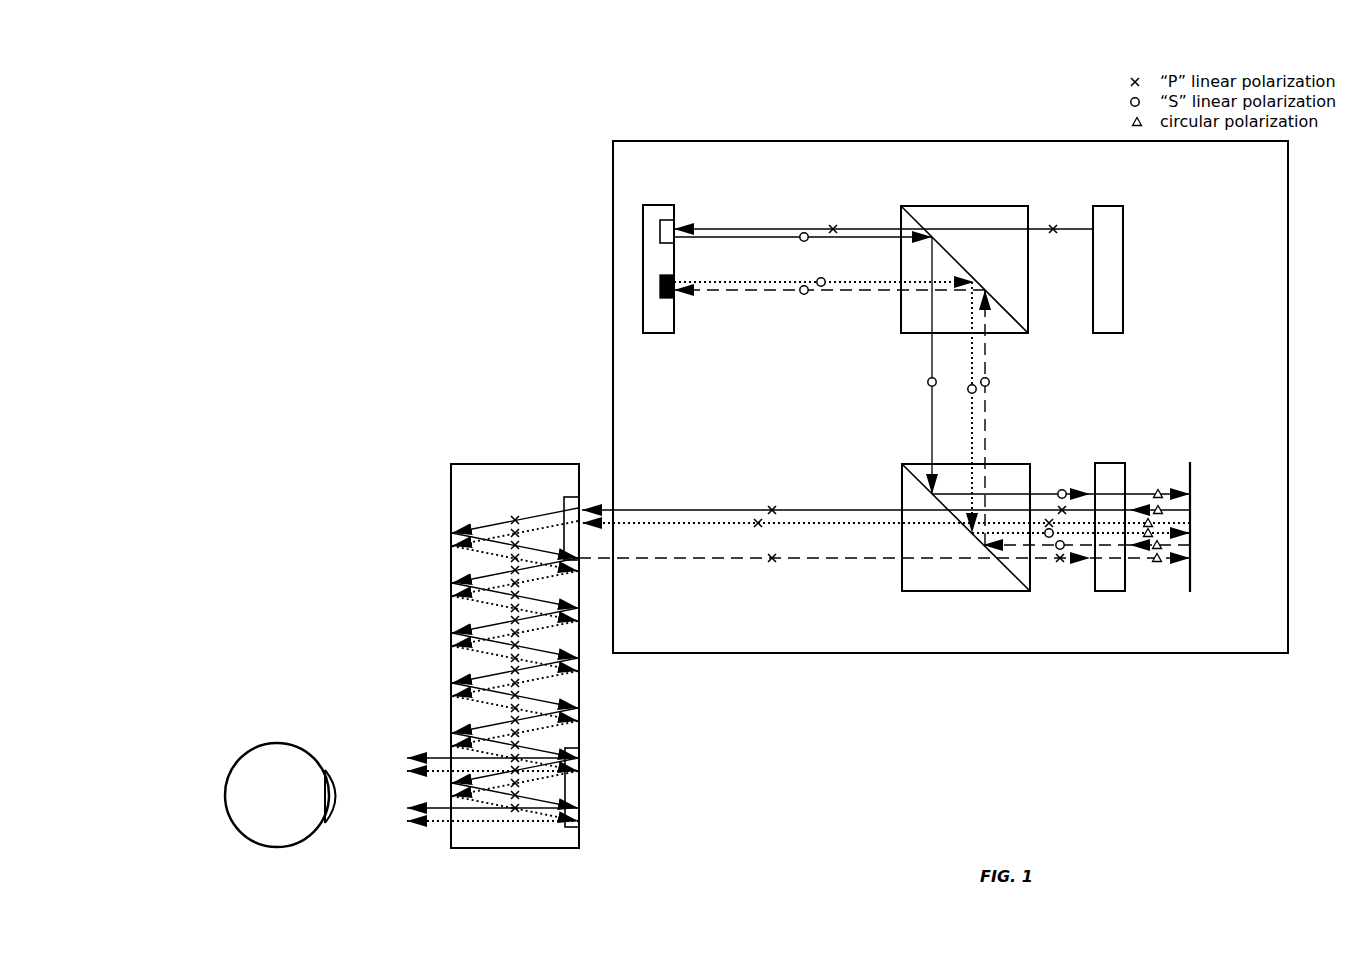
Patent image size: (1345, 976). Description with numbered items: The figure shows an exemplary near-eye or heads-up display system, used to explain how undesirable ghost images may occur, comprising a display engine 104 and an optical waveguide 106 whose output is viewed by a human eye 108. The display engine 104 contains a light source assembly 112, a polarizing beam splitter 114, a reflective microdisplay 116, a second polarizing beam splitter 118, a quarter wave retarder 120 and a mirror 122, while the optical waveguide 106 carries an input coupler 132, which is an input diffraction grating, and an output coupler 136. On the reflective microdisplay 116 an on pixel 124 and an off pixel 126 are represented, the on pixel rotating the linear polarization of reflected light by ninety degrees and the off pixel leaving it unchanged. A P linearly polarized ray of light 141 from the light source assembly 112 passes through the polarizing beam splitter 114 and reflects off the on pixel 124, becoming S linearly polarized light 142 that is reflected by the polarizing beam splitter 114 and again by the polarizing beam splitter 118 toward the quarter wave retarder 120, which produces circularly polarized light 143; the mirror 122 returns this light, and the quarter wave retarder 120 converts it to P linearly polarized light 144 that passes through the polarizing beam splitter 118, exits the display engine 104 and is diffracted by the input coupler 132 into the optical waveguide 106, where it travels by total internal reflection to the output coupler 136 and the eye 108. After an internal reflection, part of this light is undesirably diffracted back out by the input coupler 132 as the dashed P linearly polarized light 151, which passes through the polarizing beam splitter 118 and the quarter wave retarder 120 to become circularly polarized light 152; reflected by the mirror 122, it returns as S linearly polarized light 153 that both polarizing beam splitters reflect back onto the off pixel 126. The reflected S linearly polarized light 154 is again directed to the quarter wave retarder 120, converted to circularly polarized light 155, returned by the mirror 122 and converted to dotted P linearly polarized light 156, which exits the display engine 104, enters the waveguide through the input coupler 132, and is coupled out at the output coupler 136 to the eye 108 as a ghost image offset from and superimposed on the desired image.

The display engine 104 is at (1185, 657).
The optical waveguide 106 is at (515, 464).
The human eye 108 is at (262, 762).
The light source assembly 112 is at (1110, 206).
The polarizing beam splitter 114 is at (905, 206).
The reflective microdisplay 116 is at (655, 205).
The polarizing beam splitter 118 is at (1000, 464).
The quarter wave retarder 120 is at (1112, 463).
The mirror 122 is at (1190, 462).
The on pixel 124 is at (676, 222).
The off pixel 126 is at (676, 299).
The input coupler 132 is at (573, 496).
The output coupler 136 is at (573, 828).
The ray of light 141 is at (738, 227).
The S linearly polarized light 142 is at (745, 240).
The circularly polarized light 143 is at (1152, 508).
The P linearly polarized light 144 is at (840, 508).
The diffractively out-coupled P linearly polarized light 151 is at (742, 560).
The circularly polarized light 152 is at (1158, 548).
The S linearly polarized light 153 is at (850, 292).
The S linearly polarized light 154 is at (770, 280).
The circularly polarized light 155 is at (1162, 533).
The P linearly polarized light 156 is at (730, 526).